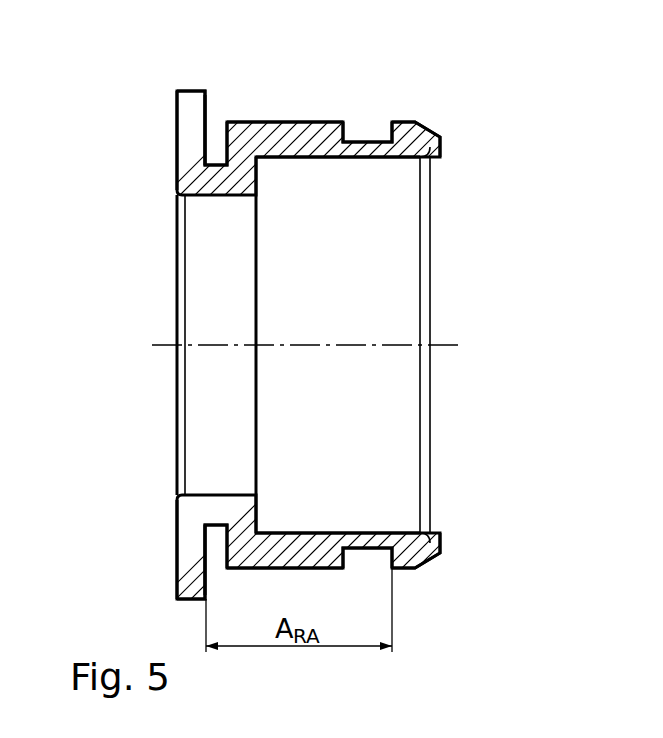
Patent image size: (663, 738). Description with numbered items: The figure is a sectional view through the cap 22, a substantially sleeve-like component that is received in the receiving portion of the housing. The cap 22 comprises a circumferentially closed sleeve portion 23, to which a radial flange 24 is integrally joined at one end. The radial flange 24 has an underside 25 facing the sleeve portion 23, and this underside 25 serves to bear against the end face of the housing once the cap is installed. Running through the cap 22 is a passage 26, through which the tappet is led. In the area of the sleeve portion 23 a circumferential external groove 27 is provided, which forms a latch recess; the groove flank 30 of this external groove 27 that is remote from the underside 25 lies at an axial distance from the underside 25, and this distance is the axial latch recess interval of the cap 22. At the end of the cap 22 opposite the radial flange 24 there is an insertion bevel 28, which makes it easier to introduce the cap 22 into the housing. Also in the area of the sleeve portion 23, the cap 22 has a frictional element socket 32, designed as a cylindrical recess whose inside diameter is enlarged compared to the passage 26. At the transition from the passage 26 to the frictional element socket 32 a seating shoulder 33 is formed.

The cap 22 is at (320, 88).
The sleeve portion 23 is at (282, 128).
The radial flange 24 is at (177, 124).
The underside 25 is at (205, 120).
The passage 26 is at (197, 295).
The circumferential external groove 27 is at (372, 130).
The insertion bevel 28 is at (427, 130).
The groove flank 30 is at (392, 560).
The frictional element socket 32 is at (355, 298).
The seating shoulder 33 is at (257, 187).